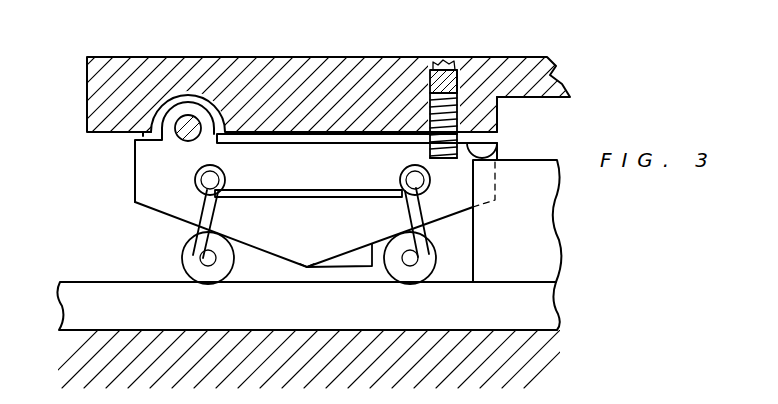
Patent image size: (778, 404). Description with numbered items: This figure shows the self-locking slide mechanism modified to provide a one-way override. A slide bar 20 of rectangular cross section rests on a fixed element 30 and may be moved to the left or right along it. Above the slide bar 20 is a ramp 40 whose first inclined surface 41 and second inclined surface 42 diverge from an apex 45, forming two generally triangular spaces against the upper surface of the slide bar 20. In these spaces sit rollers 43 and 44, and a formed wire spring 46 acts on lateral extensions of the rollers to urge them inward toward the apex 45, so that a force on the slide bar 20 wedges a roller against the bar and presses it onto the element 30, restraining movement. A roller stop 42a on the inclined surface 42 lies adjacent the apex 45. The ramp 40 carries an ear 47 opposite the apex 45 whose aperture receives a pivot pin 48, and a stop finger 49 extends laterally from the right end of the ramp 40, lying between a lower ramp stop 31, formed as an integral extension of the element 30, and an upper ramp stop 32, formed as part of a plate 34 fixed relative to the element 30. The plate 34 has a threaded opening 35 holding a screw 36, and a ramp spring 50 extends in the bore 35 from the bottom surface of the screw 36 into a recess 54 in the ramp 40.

The slide bar 20 is at (308, 306).
The fixed element 30 is at (110, 366).
The lower ramp stop 31 is at (533, 222).
The upper ramp stop 32 is at (499, 130).
The plate 34 is at (521, 76).
The threaded opening 35 is at (452, 63).
The screw 36 is at (458, 82).
The ramp 40 is at (357, 154).
The first inclined surface 41 is at (165, 208).
The second inclined surface 42 is at (466, 212).
The roller stop 42a is at (348, 262).
The roller 43 is at (200, 274).
The roller 44 is at (420, 274).
The apex 45 is at (305, 268).
The formed wire spring 46 is at (240, 197).
The ear 47 is at (150, 128).
The pivot pin 48 is at (196, 120).
The stop finger 49 is at (490, 150).
The ramp spring 50 is at (431, 97).
The recess 54 is at (428, 150).